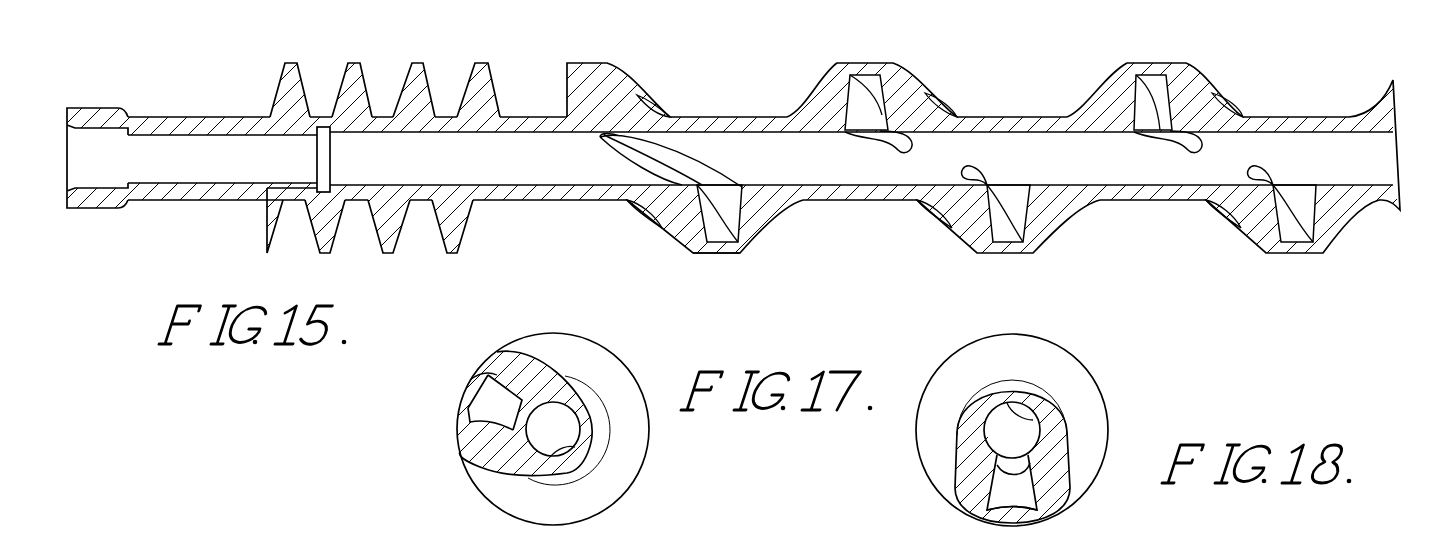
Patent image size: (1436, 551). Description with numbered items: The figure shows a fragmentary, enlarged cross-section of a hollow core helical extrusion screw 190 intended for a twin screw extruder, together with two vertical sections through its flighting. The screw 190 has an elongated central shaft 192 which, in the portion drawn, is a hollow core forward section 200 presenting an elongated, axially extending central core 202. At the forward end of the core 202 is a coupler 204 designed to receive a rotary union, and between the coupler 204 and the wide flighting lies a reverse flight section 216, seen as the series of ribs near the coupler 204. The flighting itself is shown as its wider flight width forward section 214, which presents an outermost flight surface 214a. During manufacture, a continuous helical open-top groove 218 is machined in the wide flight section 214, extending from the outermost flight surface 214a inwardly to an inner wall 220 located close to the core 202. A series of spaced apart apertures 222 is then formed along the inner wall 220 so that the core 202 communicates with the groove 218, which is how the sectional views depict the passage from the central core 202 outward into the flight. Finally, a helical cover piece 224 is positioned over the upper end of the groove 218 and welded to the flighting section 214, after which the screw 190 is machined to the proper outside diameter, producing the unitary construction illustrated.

In FIG. 15, the helical extrusion screw 190 is at (582, 250).
In FIG. 15, the elongated central shaft 192 is at (895, 241).
In FIG. 15, the hollow core forward section 200 is at (718, 117).
In FIG. 15, the central core 202 is at (1289, 143).
In FIG. 17, the central core 202 is at (573, 448).
In FIG. 18, the central core 202 is at (1030, 417).
In FIG. 15, the coupler 204 is at (97, 117).
In FIG. 15, the wider flight width forward section 214 is at (900, 97).
In FIG. 17, the wider flight width forward section 214 is at (617, 368).
In FIG. 18, the wider flight width forward section 214 is at (1060, 358).
In FIG. 15, the outermost flight surface 214a is at (1295, 258).
In FIG. 15, the reverse flight section 216 is at (297, 88).
In FIG. 15, the helical open-top groove 218 is at (1147, 97).
In FIG. 17, the helical open-top groove 218 is at (490, 400).
In FIG. 18, the helical open-top groove 218 is at (1023, 500).
In FIG. 17, the inner wall 220 is at (477, 420).
In FIG. 15, the apertures 222 is at (1167, 135).
In FIG. 18, the apertures 222 is at (1000, 483).
In FIG. 15, the helical cover piece 224 is at (723, 250).
In FIG. 17, the helical cover piece 224 is at (477, 385).
In FIG. 18, the helical cover piece 224 is at (1012, 520).